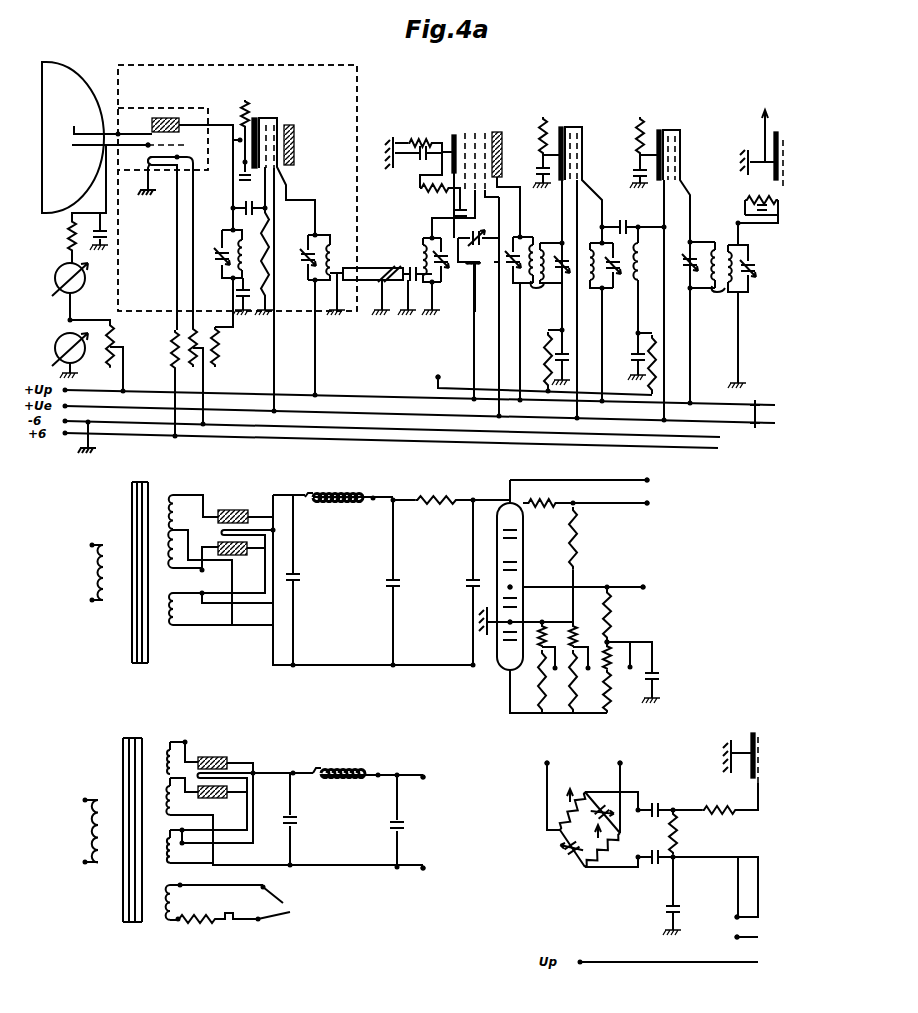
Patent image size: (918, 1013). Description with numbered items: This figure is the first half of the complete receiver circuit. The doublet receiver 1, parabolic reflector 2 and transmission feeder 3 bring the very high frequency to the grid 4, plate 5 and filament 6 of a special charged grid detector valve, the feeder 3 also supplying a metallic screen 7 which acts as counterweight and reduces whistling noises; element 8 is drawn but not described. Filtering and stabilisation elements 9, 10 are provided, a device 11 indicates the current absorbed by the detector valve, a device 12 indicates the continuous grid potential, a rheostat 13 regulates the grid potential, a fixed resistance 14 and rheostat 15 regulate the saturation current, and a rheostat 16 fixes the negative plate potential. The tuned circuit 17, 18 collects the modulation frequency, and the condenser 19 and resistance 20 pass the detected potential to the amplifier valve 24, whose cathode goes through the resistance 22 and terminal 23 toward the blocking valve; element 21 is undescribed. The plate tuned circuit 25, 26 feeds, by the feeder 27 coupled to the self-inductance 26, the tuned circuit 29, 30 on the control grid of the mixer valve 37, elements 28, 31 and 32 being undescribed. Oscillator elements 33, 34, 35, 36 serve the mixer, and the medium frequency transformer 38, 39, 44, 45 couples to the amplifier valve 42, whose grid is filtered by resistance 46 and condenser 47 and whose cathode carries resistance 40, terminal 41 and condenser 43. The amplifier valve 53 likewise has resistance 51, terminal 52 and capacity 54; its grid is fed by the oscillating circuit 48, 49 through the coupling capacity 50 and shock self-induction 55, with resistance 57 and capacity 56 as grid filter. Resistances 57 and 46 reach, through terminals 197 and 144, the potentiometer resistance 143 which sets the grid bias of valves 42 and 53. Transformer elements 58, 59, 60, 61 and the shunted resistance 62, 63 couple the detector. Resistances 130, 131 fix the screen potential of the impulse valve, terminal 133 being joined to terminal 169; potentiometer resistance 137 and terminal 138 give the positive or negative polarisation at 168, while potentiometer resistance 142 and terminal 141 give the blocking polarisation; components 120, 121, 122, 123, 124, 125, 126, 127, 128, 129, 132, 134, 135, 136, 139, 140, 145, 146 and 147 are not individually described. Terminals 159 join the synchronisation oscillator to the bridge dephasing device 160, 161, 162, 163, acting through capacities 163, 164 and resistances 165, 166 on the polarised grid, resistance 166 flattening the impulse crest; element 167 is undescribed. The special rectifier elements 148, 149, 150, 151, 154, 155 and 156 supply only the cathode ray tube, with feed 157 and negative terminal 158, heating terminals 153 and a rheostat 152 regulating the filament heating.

The doublet receiver 1 is at (72, 126).
The parabolic reflector 2 is at (66, 70).
The transmission feeder 3 is at (80, 150).
The grid 4 is at (148, 145).
The plate 5 is at (170, 118).
The filament 6 is at (165, 168).
The metallic screen 7 is at (148, 107).
The shield 8 is at (190, 66).
The filtering and stabilisation element 9 is at (66, 236).
The filtering and stabilisation element 10 is at (106, 240).
The current indicating device 11 is at (55, 278).
The potential indicating device 12 is at (55, 348).
The rheostat 13 is at (113, 340).
The fixed resistance 14 is at (170, 360).
The rheostat 15 is at (190, 345).
The rheostat 16 is at (216, 325).
The tuned circuit element 17 is at (220, 262).
The tuned circuit element 18 is at (232, 230).
The condenser 19 is at (246, 208).
The resistance 20 is at (267, 250).
The capacitor 21 is at (244, 162).
The resistance 22 is at (279, 118).
The terminal 23 is at (247, 100).
The amplifier valve 24 is at (292, 125).
The tuned circuit element 25 is at (308, 270).
The self-inductance 26 is at (331, 240).
The feeder 27 is at (370, 268).
The capacitor 28 is at (412, 268).
The tuned circuit element 29 is at (424, 240).
The tuned circuit element 30 is at (441, 262).
The resistor 31 is at (408, 142).
The capacitor 32 is at (421, 160).
The oscillator element 33 is at (448, 192).
The oscillator element 34 is at (458, 210).
The oscillator element 35 is at (482, 266).
The oscillator element 36 is at (477, 312).
The mixer valve 37 is at (496, 130).
The medium frequency transformer element 38 is at (519, 237).
The medium frequency transformer element 39 is at (534, 243).
The resistance 40 is at (545, 118).
The terminal 41 is at (546, 112).
The amplifier valve 42 is at (580, 127).
The filtering and stabilisation condenser 43 is at (542, 168).
The medium frequency transformer element 44 is at (539, 287).
The medium frequency transformer element 45 is at (562, 262).
The resistance 46 is at (548, 345).
The condenser 47 is at (566, 355).
The oscillating circuit element 48 is at (592, 289).
The oscillating circuit element 49 is at (612, 280).
The coupling capacity 50 is at (622, 222).
The resistance 51 is at (640, 117).
The terminal 52 is at (644, 112).
The amplifier valve 53 is at (678, 130).
The capacity 54 is at (640, 170).
The shock self-induction 55 is at (646, 256).
The capacity 56 is at (635, 352).
The resistance 57 is at (652, 345).
The medium frequency transformer element 58 is at (691, 255).
The medium frequency transformer element 59 is at (713, 252).
The transformer secondary element 60 is at (715, 292).
The transformer secondary element 61 is at (750, 272).
The shunted resistance 62 is at (765, 213).
The shunted resistance 63 is at (760, 200).
The terminal 197 is at (444, 371).
The transformer core 120 is at (130, 520).
The primary winding 121 is at (92, 543).
The rectifier 122 is at (225, 510).
The secondary windings 123 is at (170, 628).
The choke coil 124 is at (322, 492).
The capacitor 125 is at (300, 578).
The capacitor 126 is at (392, 582).
The resistor 127 is at (438, 500).
The capacitor 128 is at (472, 582).
The voltage regulator tube 129 is at (504, 503).
The resistance 130 is at (550, 503).
The resistance 131 is at (577, 540).
The terminal +Up 132 is at (650, 480).
The terminal 133 is at (650, 503).
The tap 134 is at (513, 587).
The terminal +Ue 135 is at (646, 587).
The resistor 136 is at (610, 620).
The potentiometer resistance 137 is at (613, 640).
The terminal 138 is at (609, 670).
The resistor 139 is at (630, 667).
The capacitor 140 is at (655, 680).
The terminal 141 is at (575, 675).
The potentiometer resistance 142 is at (576, 633).
The potentiometer resistance 143 is at (545, 626).
The terminal 144 is at (544, 675).
The lead 145 is at (597, 714).
The lead 146 is at (551, 714).
The tap 147 is at (513, 620).
The special rectifier element 148 is at (128, 753).
The special rectifier element 149 is at (85, 798).
The special rectifier element 150 is at (210, 757).
The special rectifier element 151 is at (163, 923).
The rheostat 152 is at (212, 925).
The terminals 153 is at (301, 903).
The special rectifier element 154 is at (298, 824).
The special rectifier element 155 is at (338, 766).
The special rectifier element 156 is at (392, 826).
The feed 157 is at (426, 777).
The special rectifier terminal 158 is at (426, 868).
The terminals 159 is at (614, 763).
The bridge dephasing device element 160 is at (560, 812).
The bridge dephasing device element 161 is at (571, 852).
The bridge dephasing device element 162 is at (605, 852).
The capacity 163 is at (620, 792).
The capacity 164 is at (656, 850).
The resistance 165 is at (677, 836).
The resistance 166 is at (720, 808).
The capacitor 167 is at (670, 906).
The polarisation point 168 is at (735, 916).
The terminal 169 is at (734, 937).